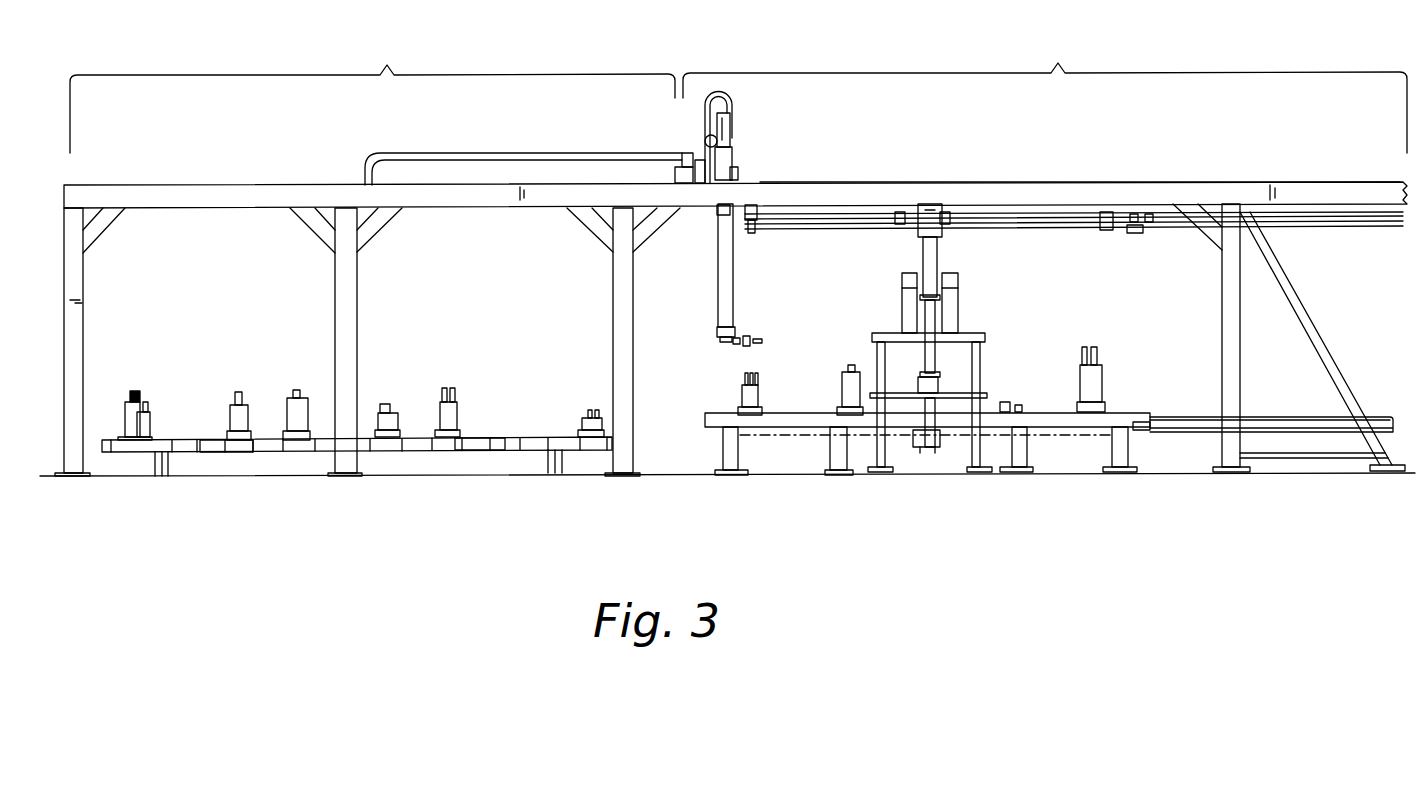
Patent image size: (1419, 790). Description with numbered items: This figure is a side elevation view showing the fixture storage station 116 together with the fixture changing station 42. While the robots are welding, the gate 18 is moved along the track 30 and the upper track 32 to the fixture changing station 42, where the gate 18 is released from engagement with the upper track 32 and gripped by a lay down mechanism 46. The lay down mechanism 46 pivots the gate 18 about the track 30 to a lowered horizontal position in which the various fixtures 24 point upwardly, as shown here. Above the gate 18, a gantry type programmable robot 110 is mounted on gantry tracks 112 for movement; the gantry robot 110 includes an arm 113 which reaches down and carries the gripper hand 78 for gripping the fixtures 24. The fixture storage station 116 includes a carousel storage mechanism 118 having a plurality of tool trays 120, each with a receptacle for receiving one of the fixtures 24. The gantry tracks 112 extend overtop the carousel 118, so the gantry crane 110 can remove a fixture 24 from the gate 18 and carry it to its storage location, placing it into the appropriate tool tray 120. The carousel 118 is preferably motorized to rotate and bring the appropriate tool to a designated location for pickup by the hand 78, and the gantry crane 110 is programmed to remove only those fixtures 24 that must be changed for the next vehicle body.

The fixture storage station 116 is at (387, 110).
The fixture changing station 42 is at (1045, 94).
The gantry type programmable robot 110 is at (730, 152).
The gantry track 112 is at (953, 182).
The upper track 32 is at (1370, 220).
The arm 113 is at (722, 300).
The gripper hand 78 is at (757, 340).
The lay down mechanism 46 is at (957, 343).
The fixtures 24 is at (233, 410).
The track 30 is at (1182, 392).
The tool trays 120 is at (297, 452).
The carousel storage mechanism 118 is at (399, 472).
The gate 18 is at (797, 422).